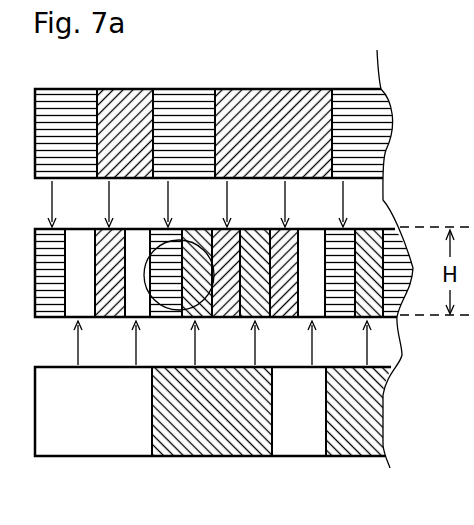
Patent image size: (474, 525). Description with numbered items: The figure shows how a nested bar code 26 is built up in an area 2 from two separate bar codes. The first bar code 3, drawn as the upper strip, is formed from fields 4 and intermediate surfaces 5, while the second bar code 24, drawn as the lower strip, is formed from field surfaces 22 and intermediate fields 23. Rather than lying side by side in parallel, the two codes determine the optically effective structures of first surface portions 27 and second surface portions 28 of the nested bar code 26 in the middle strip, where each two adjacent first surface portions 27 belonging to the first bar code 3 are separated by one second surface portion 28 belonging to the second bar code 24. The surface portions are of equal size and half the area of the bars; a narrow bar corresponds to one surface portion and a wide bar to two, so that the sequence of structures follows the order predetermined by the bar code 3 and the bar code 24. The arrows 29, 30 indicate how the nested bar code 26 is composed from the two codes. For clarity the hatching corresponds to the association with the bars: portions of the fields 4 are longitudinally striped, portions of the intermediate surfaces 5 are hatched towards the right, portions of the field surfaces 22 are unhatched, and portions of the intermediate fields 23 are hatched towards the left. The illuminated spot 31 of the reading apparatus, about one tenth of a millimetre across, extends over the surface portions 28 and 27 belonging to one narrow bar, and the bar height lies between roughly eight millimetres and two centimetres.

The area 2 is at (243, 319).
The first bar code 3 is at (285, 82).
The fields 4 is at (37, 82).
The intermediate surfaces 5 is at (98, 81).
The field surfaces 22 is at (148, 460).
The intermediate fields 23 is at (266, 460).
The second bar code 24 is at (338, 461).
The nested bar code 26 is at (272, 220).
The first surface portions 27 is at (330, 252).
The second surface portions 28 is at (316, 319).
The arrows 29 is at (55, 202).
The arrows 30 is at (80, 345).
The illuminated spot 31 is at (148, 227).